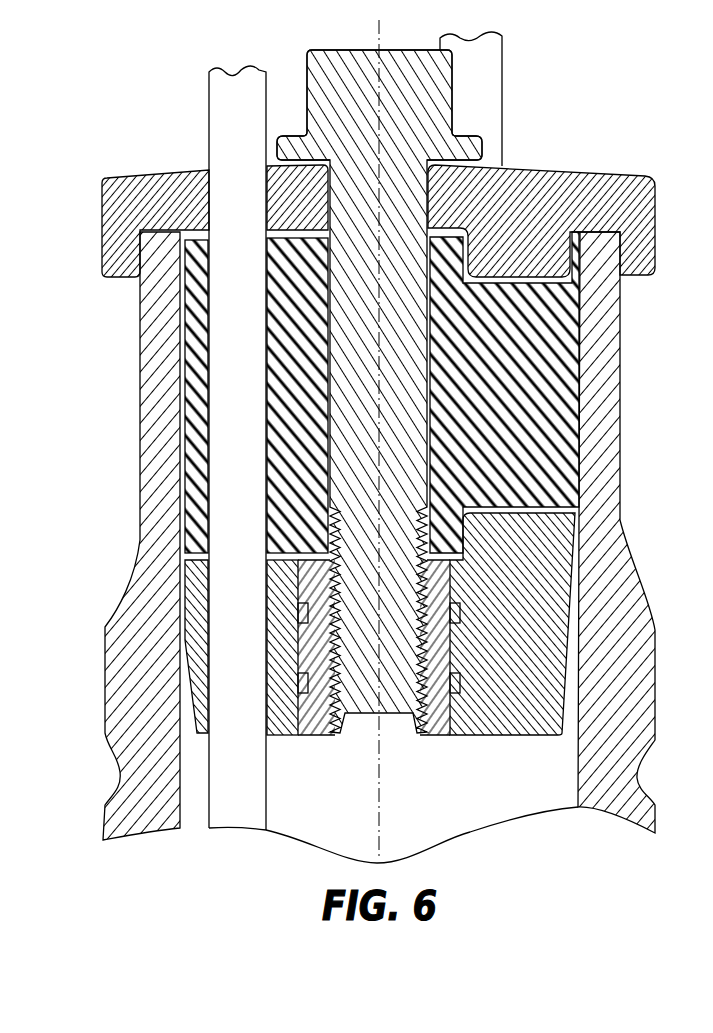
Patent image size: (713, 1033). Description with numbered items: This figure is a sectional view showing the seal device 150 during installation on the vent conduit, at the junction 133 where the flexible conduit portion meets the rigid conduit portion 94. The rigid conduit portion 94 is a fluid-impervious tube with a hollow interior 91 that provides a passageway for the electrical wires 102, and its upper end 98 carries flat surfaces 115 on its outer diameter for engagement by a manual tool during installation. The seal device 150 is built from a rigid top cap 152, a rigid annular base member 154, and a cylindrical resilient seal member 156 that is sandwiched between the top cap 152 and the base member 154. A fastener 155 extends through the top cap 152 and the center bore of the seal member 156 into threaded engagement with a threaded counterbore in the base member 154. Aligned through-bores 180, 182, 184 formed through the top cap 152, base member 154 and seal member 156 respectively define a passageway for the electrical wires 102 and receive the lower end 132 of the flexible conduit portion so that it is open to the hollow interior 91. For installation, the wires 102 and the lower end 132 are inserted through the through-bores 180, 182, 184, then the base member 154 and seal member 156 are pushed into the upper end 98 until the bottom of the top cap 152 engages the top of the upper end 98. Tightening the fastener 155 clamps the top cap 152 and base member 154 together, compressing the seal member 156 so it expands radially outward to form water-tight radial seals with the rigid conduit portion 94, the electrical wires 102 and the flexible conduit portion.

The hollow interior 91 is at (492, 791).
The rigid conduit portion 94 is at (640, 585).
The upper end 98 is at (598, 322).
The electrical wires 102 is at (240, 787).
The flat surfaces 115 is at (137, 445).
The lower end 132 is at (505, 136).
The junction 133 is at (94, 232).
The seal device 150 is at (392, 369).
The top cap 152 is at (623, 174).
The base member 154 is at (575, 713).
The fastener 155 is at (458, 110).
The seal member 156 is at (583, 421).
The through-bore 180 is at (205, 203).
The through-bore 182 is at (207, 645).
The through-bore 184 is at (207, 352).